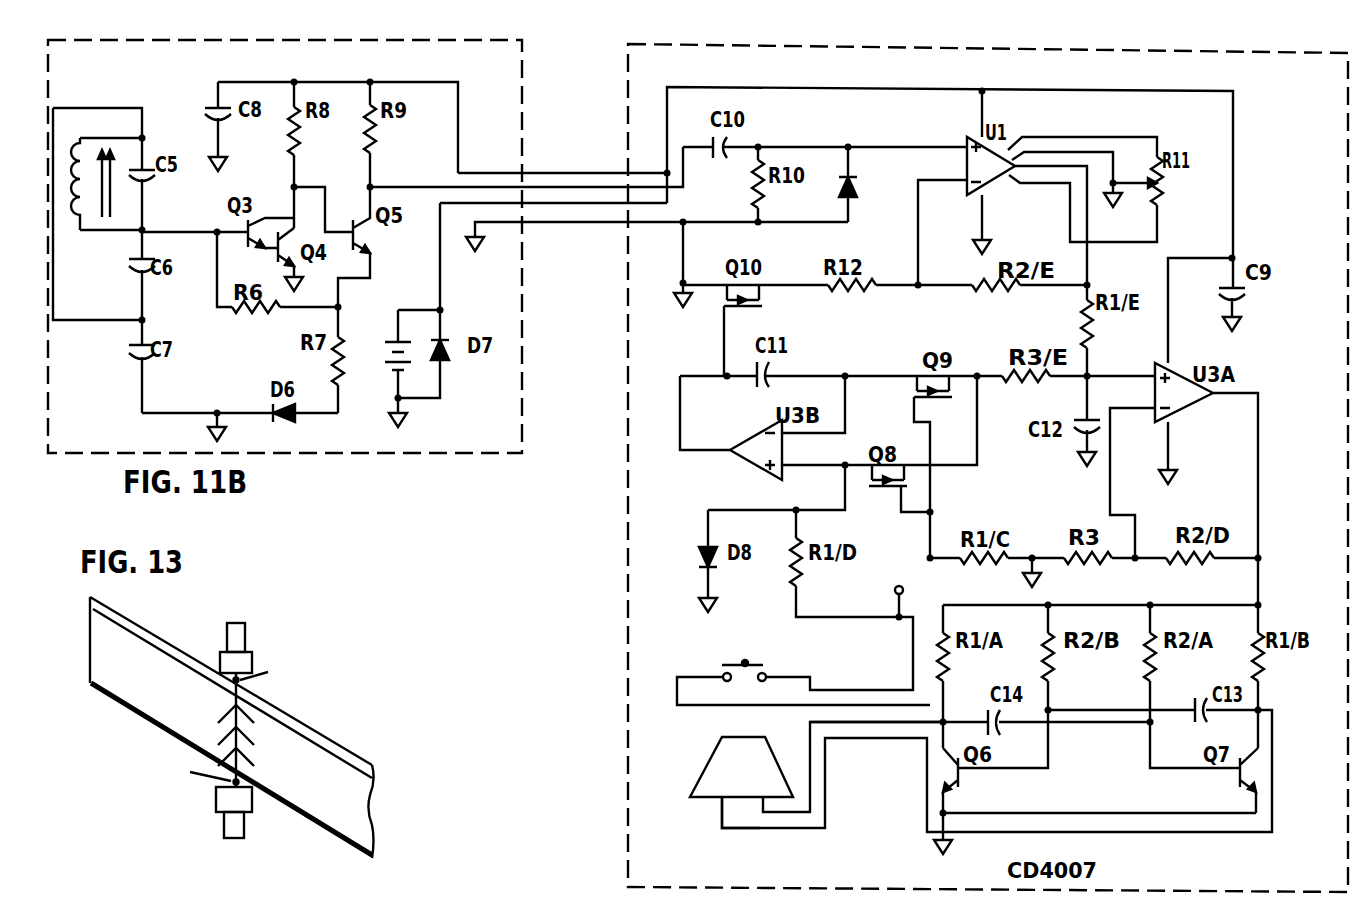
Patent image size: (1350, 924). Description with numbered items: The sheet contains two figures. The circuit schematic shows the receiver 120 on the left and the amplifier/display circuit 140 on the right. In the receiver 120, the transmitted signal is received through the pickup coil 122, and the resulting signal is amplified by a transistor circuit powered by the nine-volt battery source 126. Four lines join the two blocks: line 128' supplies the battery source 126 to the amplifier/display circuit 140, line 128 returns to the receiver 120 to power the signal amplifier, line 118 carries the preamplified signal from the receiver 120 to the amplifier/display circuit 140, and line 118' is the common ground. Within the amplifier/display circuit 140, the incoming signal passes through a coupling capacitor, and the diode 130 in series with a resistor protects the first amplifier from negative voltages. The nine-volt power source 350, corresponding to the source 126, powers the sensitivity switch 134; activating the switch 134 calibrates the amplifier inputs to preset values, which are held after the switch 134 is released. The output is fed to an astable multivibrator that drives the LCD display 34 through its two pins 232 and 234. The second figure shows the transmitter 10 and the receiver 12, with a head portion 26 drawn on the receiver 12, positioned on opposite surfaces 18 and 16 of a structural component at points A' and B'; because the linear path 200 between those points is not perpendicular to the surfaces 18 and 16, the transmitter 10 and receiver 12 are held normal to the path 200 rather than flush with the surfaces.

In FIG. 11B, the receiver 120 is at (522, 84).
In FIG. 11B, the amplifier/display circuit 140 is at (628, 87).
In FIG. 11B, the line 128 is at (562, 157).
In FIG. 11B, the line 118 is at (526, 162).
In FIG. 11B, the line 128' is at (553, 245).
In FIG. 11B, the line 118' is at (574, 245).
In FIG. 11B, the pickup coil 122 is at (82, 205).
In FIG. 11B, the nine-volt battery source 126 is at (383, 370).
In FIG. 11B, the diode 130 is at (855, 230).
In FIG. 11B, the sensitivity switch 134 is at (758, 660).
In FIG. 11B, the nine-volt power source 350 is at (894, 592).
In FIG. 11B, the LCD display 34 is at (708, 760).
In FIG. 11B, the pin 232 is at (720, 798).
In FIG. 11B, the pin 234 is at (756, 802).
In FIG. 13, the receiver 12 is at (252, 621).
In FIG. 13, the upper probe head 26 is at (255, 663).
In FIG. 13, the linear path 200 is at (238, 737).
In FIG. 13, the surface 18 is at (340, 748).
In FIG. 13, the surface 16 is at (290, 813).
In FIG. 13, the transmitter 10 is at (213, 825).